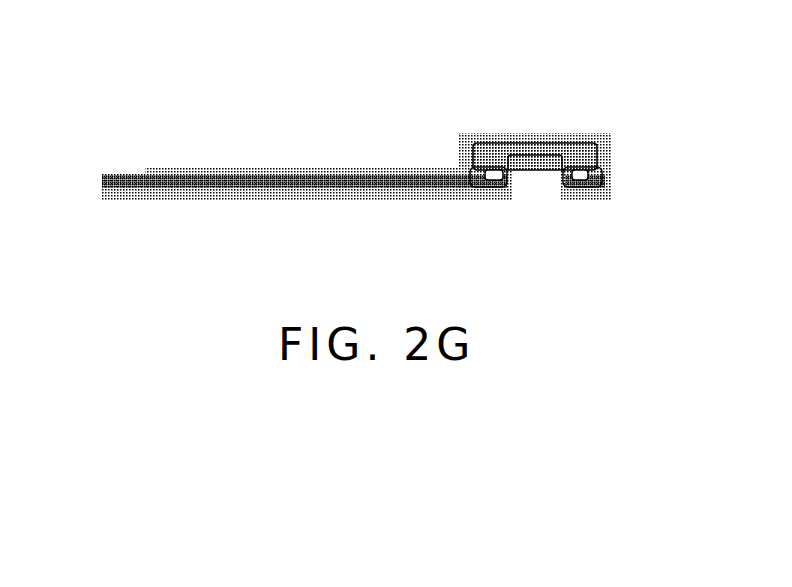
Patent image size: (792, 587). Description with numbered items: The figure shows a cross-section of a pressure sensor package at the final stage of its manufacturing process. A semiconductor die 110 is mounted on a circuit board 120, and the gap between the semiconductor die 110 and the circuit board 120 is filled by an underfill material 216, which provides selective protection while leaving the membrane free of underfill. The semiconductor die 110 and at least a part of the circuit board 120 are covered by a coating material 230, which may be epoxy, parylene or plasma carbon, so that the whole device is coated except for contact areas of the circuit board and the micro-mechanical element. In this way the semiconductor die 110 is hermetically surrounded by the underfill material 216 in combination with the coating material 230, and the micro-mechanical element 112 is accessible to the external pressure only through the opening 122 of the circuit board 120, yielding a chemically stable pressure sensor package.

The semiconductor die 110 is at (517, 146).
The micro-mechanical element 112 is at (542, 172).
The circuit board 120 is at (173, 200).
The opening 122 is at (522, 186).
The underfill material 216 is at (597, 167).
The coating material 230 is at (330, 168).